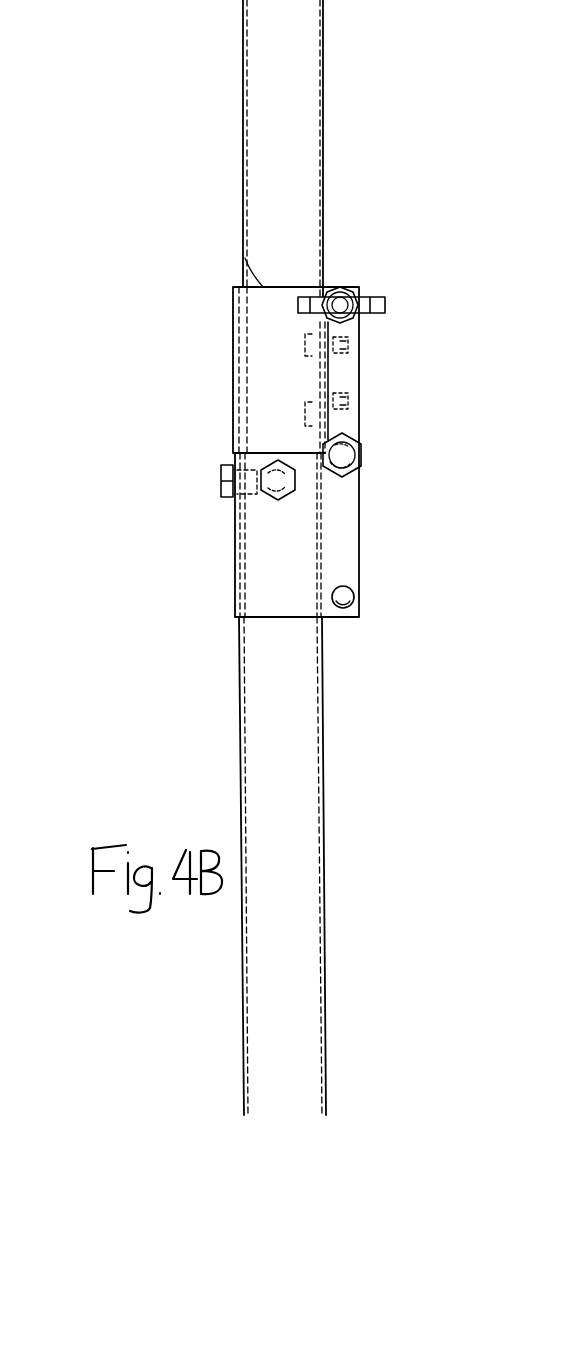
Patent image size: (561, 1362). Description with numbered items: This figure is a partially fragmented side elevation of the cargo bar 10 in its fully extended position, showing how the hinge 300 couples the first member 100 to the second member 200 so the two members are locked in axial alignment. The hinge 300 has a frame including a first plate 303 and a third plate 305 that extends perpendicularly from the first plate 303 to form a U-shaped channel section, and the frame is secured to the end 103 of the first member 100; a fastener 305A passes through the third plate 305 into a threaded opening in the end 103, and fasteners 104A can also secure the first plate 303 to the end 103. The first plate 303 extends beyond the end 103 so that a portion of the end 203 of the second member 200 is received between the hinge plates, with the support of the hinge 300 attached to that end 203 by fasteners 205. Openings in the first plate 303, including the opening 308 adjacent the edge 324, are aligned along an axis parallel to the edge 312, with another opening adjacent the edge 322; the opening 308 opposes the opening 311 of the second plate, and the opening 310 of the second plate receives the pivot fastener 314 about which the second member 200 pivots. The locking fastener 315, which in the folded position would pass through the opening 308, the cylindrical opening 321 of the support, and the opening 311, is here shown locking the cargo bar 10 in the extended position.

The cargo bar 10 is at (133, 138).
The first member 100 is at (241, 721).
The end 103 is at (240, 630).
The fastener 104A is at (271, 498).
The second member 200 is at (258, 96).
The end 203 is at (243, 276).
The fasteners 205 is at (305, 420).
The hinge 300 is at (195, 425).
The first plate 303 is at (247, 368).
The third plate 305 is at (235, 345).
The fastener 305A is at (225, 492).
The opening 308 is at (343, 606).
The opening 310 is at (342, 452).
The opening 311 is at (364, 462).
The edge 312 is at (359, 378).
The fastener 314 is at (364, 465).
The fastener 315 is at (298, 305).
The cylindrical opening 321 is at (332, 284).
The edge 322 is at (246, 264).
The edge 324 is at (270, 617).